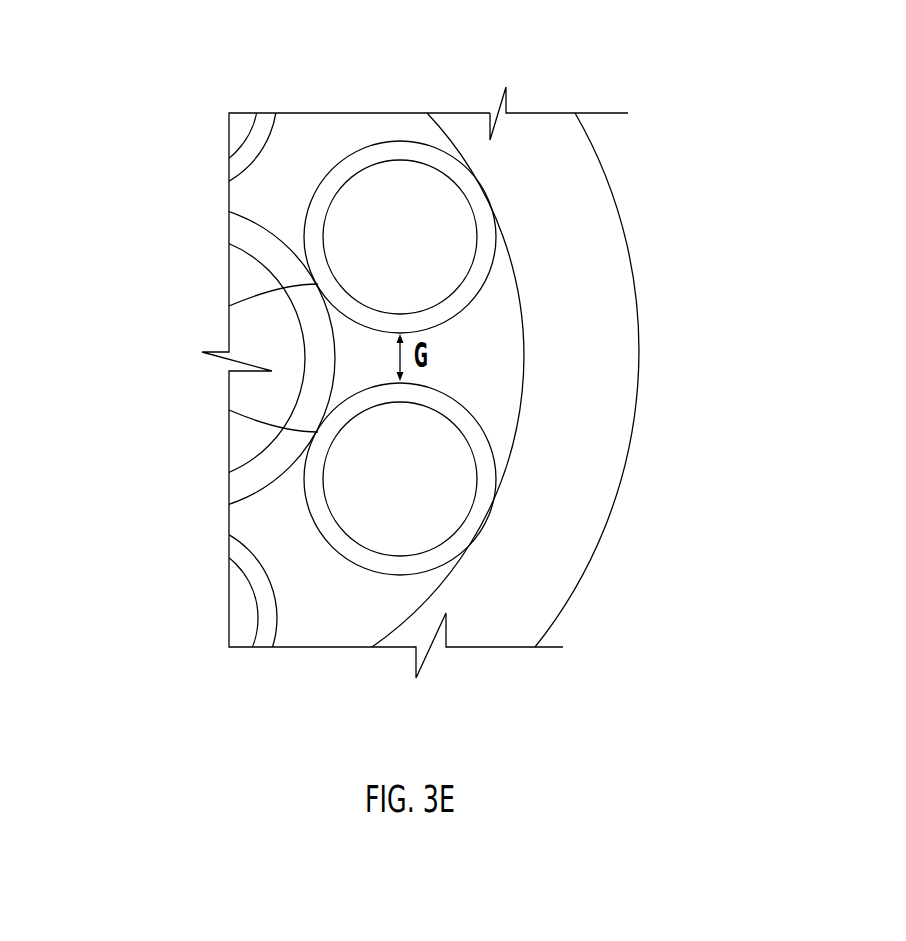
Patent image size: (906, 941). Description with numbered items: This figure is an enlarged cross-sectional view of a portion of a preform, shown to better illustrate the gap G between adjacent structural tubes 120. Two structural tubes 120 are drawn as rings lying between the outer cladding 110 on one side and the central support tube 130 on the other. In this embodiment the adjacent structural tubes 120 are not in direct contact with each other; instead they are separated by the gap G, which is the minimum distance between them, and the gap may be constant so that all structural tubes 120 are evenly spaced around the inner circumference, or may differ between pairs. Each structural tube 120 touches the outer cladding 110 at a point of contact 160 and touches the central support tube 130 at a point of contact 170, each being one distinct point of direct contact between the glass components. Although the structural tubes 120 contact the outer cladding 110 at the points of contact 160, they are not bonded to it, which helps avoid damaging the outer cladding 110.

The outer cladding 110 is at (517, 142).
The structural tubes 120 is at (386, 148).
The central support tube 130 is at (240, 235).
The points of contact 160 is at (482, 190).
The points of contact 170 is at (318, 286).